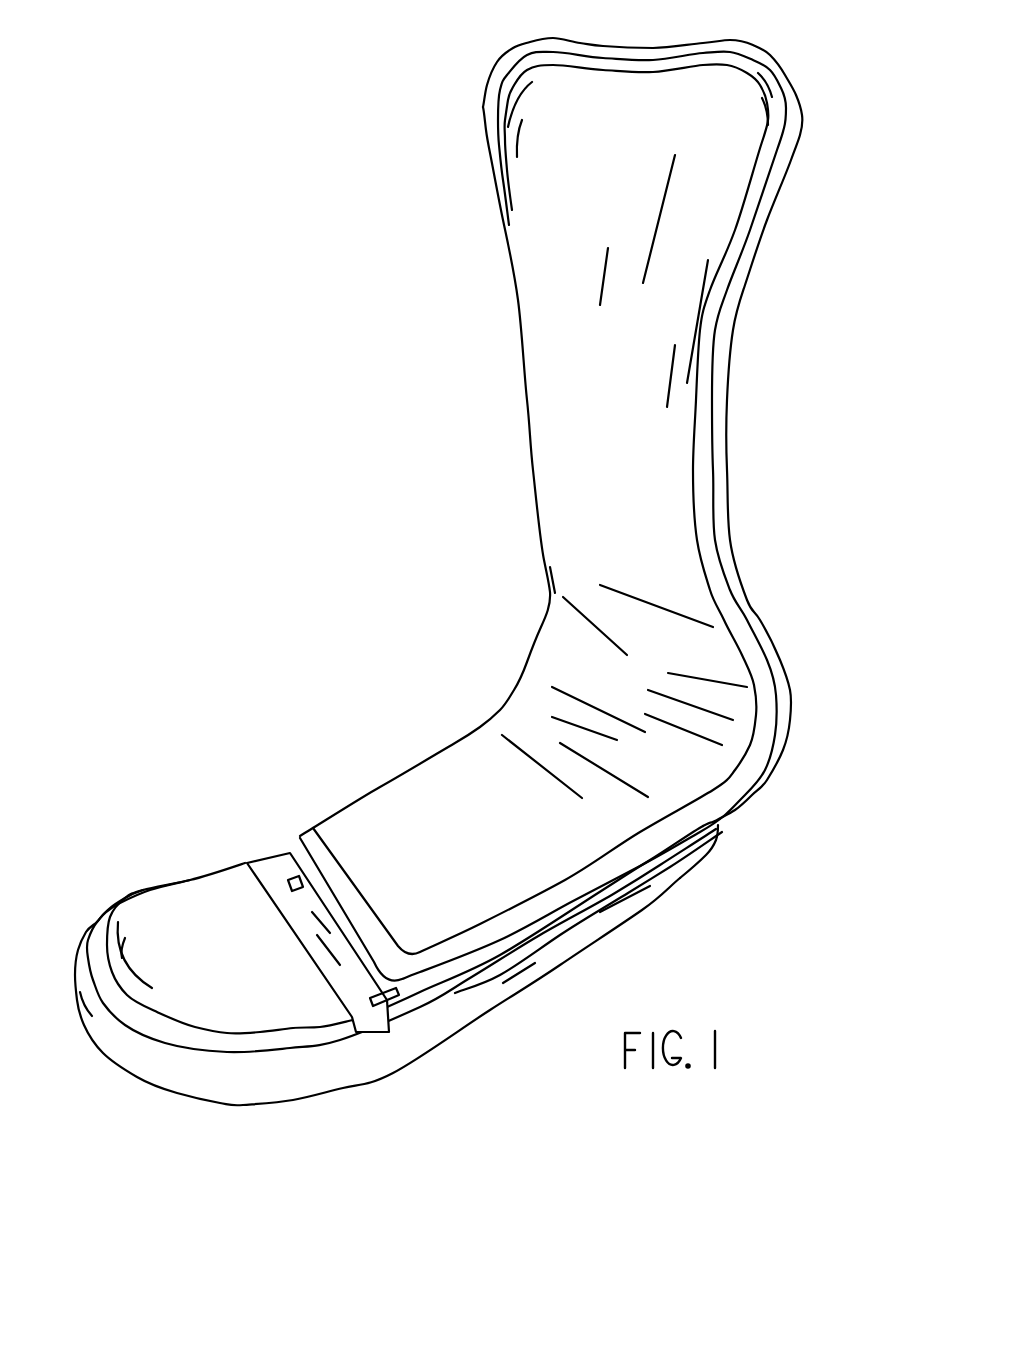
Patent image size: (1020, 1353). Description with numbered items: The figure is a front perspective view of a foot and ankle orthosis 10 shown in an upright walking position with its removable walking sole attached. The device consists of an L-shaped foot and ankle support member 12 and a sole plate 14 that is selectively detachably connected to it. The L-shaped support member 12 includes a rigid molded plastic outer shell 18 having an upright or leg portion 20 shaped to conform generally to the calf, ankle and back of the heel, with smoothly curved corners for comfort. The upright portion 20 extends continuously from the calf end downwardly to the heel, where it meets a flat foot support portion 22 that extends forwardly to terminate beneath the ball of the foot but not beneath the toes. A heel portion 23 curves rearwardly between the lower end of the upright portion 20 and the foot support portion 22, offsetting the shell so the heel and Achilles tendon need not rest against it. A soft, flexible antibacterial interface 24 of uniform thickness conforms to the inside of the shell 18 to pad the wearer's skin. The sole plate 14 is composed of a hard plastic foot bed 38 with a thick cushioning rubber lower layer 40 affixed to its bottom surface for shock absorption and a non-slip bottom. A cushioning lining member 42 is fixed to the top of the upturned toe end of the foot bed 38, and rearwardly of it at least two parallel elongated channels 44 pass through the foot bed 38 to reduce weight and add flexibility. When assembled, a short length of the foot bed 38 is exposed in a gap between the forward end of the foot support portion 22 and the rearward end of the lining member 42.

The foot and ankle orthosis 10 is at (328, 400).
The L-shaped foot and ankle support member 12 is at (747, 433).
The sole plate 14 is at (227, 855).
The outer shell 18 is at (725, 553).
The upright portion 20 is at (737, 318).
The foot support portion 22 is at (565, 900).
The heel portion 23 is at (775, 745).
The interface lining 24 is at (558, 468).
The foot bed 38 is at (271, 872).
The lower layer 40 is at (311, 1077).
The cushioning lining member 42 is at (182, 922).
The elongated channels 44 is at (386, 997).